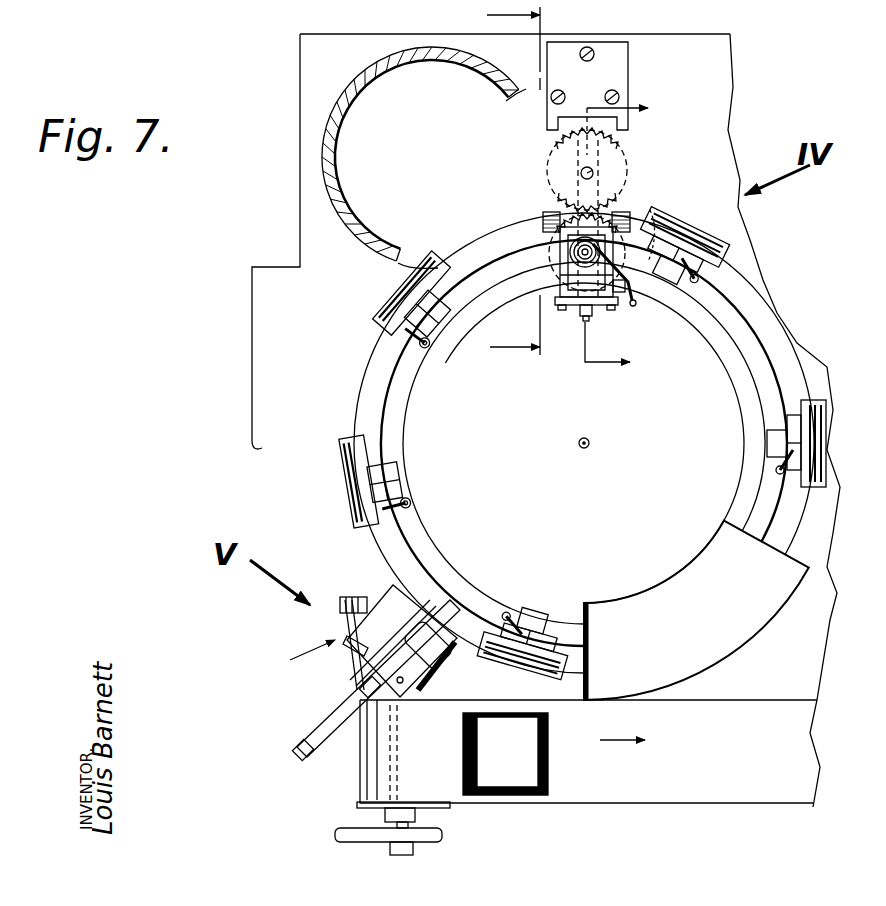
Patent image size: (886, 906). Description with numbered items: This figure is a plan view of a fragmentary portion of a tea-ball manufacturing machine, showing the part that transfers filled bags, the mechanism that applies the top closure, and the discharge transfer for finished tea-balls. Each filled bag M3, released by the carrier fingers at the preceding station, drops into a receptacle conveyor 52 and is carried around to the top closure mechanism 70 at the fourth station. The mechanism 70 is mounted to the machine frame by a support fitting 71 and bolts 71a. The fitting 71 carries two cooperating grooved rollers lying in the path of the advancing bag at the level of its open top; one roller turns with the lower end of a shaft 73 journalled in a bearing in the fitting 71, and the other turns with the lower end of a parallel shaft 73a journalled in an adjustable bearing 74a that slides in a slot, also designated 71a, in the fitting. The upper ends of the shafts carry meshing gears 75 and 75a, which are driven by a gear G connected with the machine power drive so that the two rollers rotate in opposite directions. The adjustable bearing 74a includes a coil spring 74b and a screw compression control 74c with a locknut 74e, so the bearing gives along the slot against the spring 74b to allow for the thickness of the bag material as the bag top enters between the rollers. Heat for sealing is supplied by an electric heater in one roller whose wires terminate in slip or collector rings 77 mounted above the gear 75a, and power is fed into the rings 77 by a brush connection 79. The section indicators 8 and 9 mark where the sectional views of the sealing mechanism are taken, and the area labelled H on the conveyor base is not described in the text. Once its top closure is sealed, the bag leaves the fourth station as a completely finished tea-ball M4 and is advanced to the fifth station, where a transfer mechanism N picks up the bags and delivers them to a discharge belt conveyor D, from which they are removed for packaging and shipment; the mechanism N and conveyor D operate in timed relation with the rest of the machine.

The section line 8- 8 is at (522, 180).
The section line 9- 9 is at (626, 235).
The receptacle conveyor 52 is at (395, 455).
The top closure mechanism 70 is at (637, 172).
The support fitting 71 is at (548, 100).
The bolts 71a is at (614, 94).
The shaft 73 is at (594, 175).
The shaft 73a is at (587, 238).
The adjustable bearing 74a is at (565, 243).
The coil spring 74b is at (555, 289).
The screw compression control 74c is at (578, 322).
The locknut 74e is at (598, 308).
The gear 75 is at (620, 152).
The gear 75a is at (650, 210).
The slip or collector rings 77 is at (478, 264).
The brush connection 79 is at (633, 292).
The gear G is at (563, 130).
The filled bag M3 is at (705, 252).
The tea-ball M4 is at (398, 293).
The transfer mechanism N is at (301, 658).
The housing opening H is at (505, 795).
The discharge belt conveyor D is at (680, 787).